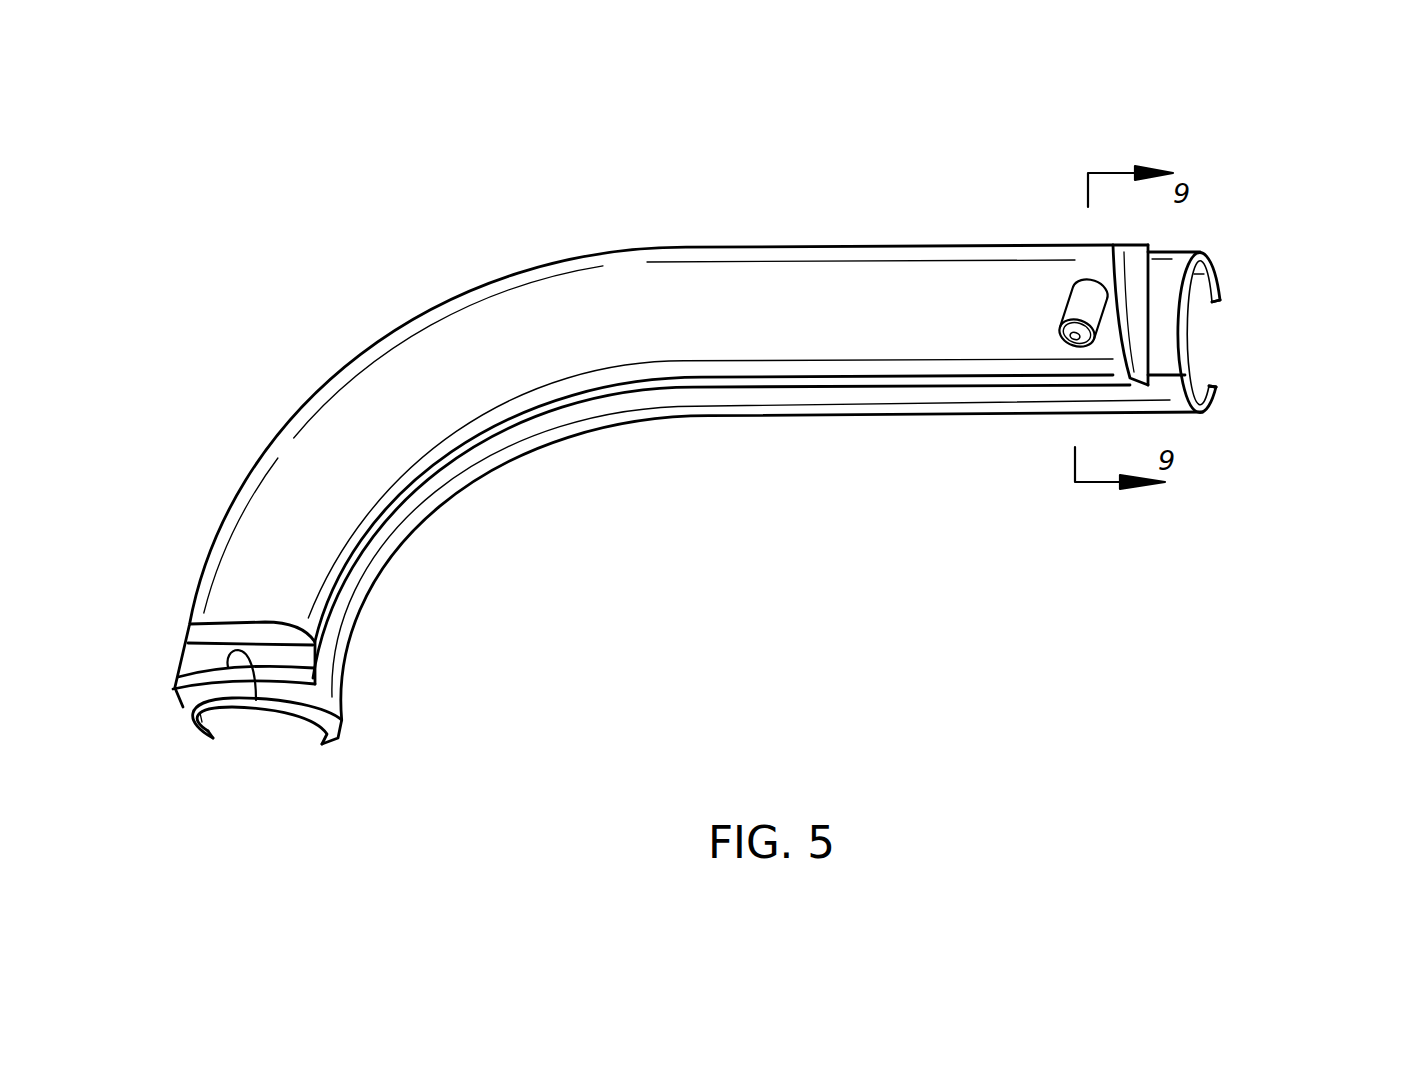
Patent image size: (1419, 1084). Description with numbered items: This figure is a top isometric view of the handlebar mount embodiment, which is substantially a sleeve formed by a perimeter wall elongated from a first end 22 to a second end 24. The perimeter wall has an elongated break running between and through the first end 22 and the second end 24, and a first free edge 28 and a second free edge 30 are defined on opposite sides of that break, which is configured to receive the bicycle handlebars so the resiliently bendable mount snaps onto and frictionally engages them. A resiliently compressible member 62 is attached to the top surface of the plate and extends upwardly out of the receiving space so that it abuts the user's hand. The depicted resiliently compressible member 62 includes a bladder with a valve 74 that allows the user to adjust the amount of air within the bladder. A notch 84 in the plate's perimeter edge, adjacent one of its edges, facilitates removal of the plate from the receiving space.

The resiliently compressible member 62 is at (732, 281).
The second end 24 is at (1217, 272).
The first free edge 28 is at (1205, 309).
The second free edge 30 is at (1205, 386).
The valve 74 is at (1066, 297).
The first end 22 is at (320, 744).
The notch 84 is at (256, 700).